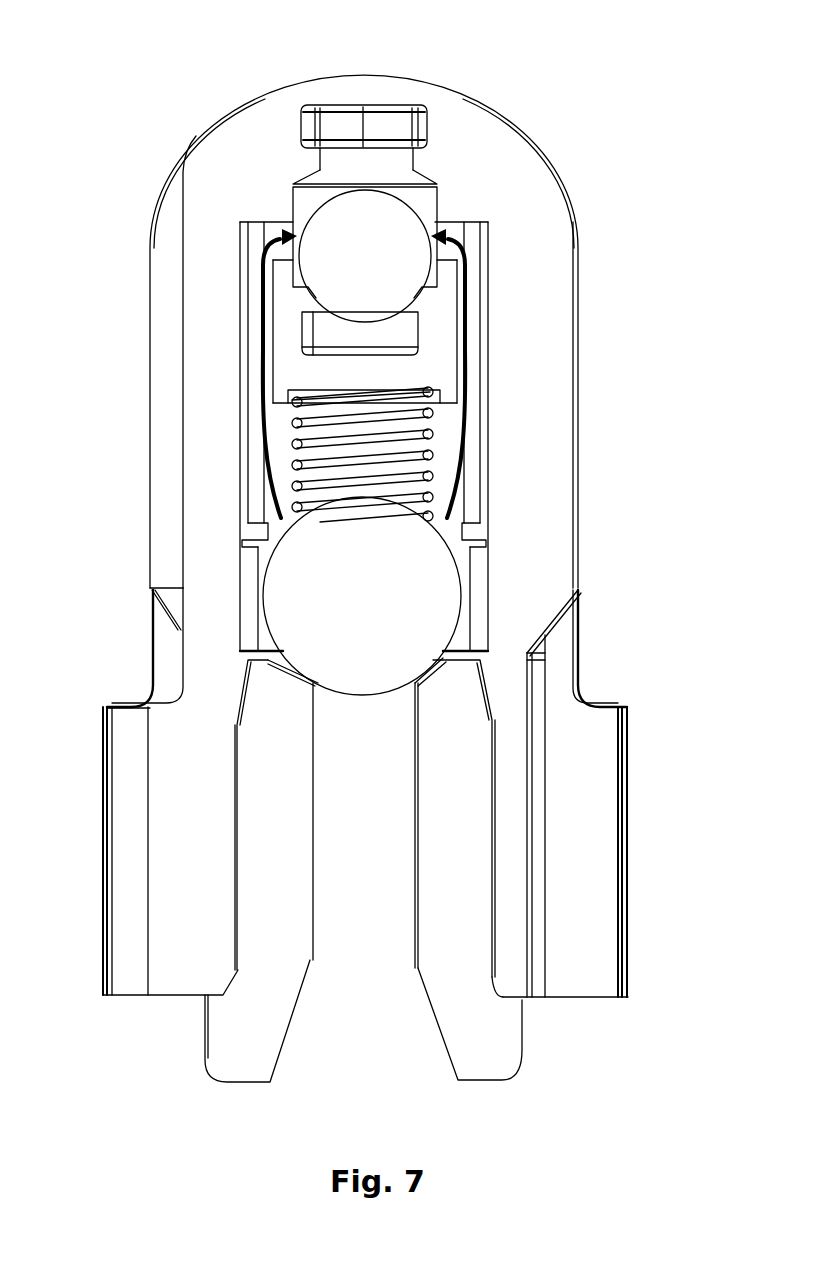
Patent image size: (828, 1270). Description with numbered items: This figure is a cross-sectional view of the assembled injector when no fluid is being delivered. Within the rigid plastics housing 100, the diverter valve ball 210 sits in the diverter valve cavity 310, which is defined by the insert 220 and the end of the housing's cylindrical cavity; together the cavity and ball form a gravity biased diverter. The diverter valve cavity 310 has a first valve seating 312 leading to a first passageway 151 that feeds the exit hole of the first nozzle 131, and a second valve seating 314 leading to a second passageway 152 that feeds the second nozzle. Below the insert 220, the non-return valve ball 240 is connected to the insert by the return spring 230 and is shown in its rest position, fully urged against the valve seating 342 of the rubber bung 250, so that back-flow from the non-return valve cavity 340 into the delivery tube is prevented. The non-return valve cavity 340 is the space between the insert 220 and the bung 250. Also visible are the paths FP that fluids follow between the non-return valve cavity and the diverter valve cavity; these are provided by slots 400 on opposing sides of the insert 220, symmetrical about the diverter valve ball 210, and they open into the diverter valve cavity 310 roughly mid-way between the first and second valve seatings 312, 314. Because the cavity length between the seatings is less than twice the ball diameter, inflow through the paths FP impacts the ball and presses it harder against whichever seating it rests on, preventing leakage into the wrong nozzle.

The housing 100 is at (548, 345).
The first nozzle 131 is at (365, 103).
The first passageway 151 is at (332, 162).
The second passageway 152 is at (330, 332).
The diverter valve ball 210 is at (400, 215).
The insert 220 is at (440, 305).
The return spring 230 is at (298, 405).
The non-return valve ball 240 is at (420, 587).
The bung 250 is at (448, 830).
The diverter valve cavity 310 is at (310, 197).
The first valve seating 312 is at (418, 170).
The second valve seating 314 is at (285, 290).
The non-return valve cavity 340 is at (250, 535).
The valve seating 342 is at (527, 657).
The slots 400 is at (258, 500).
The paths FP is at (262, 435).